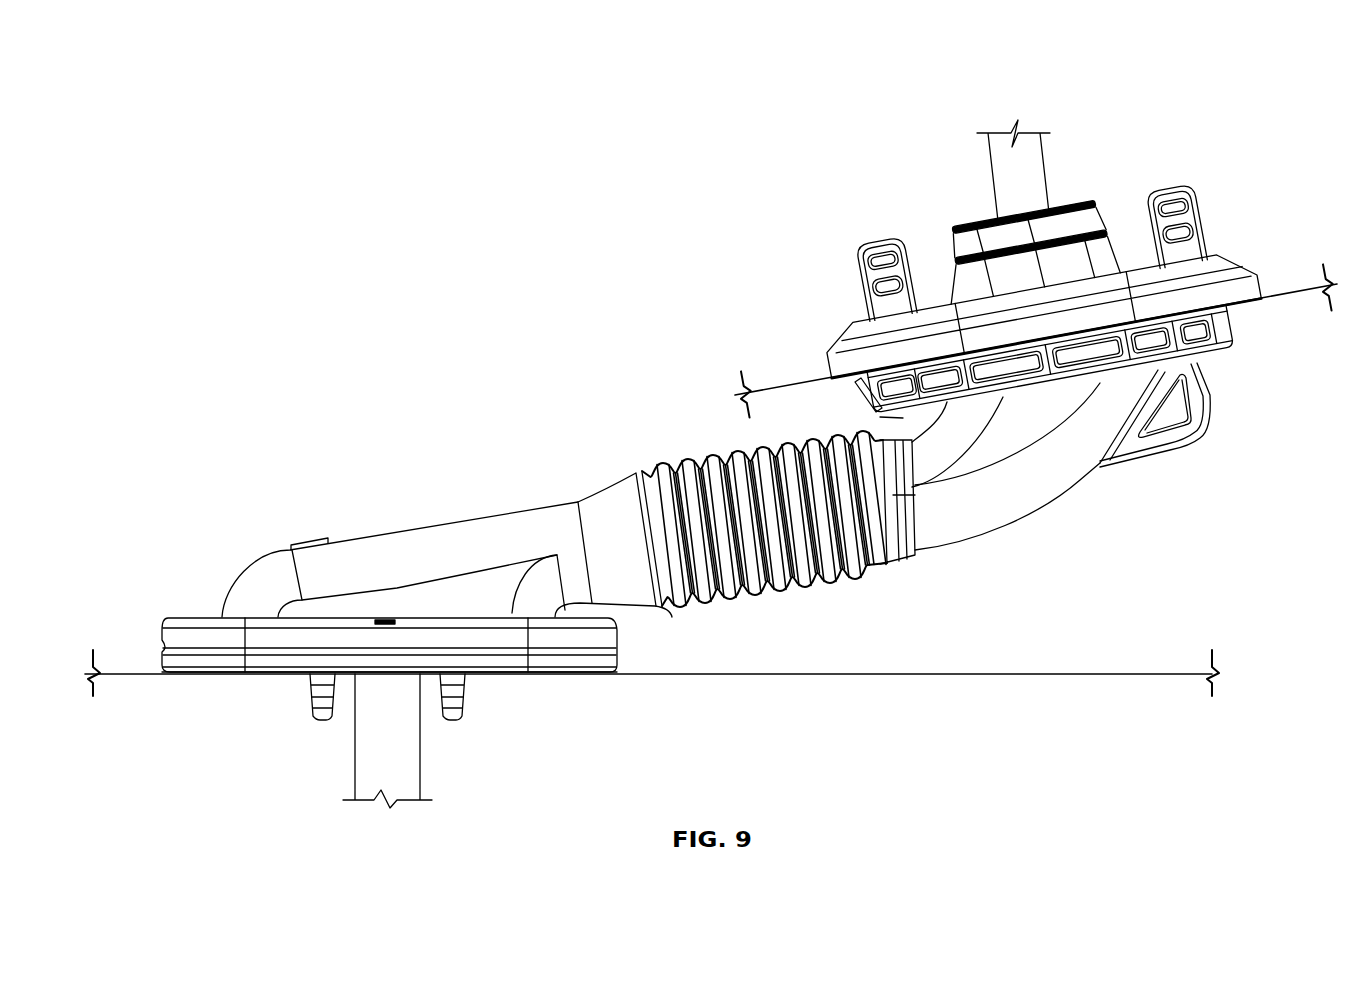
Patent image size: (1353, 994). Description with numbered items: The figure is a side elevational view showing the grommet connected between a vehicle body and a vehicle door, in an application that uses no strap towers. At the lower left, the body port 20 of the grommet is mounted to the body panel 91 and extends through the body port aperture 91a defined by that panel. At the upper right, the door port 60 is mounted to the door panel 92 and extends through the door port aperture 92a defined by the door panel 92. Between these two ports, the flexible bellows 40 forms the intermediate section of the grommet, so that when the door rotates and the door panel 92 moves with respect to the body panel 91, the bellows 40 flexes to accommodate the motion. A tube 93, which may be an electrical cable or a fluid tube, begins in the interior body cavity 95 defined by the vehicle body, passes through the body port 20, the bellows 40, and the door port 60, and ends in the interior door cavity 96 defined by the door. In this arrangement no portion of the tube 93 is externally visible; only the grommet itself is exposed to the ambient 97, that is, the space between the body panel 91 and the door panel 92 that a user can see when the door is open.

The body port 20 is at (172, 608).
The flexible bellows 40 is at (820, 582).
The door port 60 is at (808, 348).
The body panel 91 is at (1118, 673).
The body port aperture 91a is at (203, 687).
The door panel 92 is at (1298, 287).
The door port aperture 92a is at (848, 398).
The tube 93 is at (355, 762).
The interior body cavity 95 is at (940, 754).
The interior door cavity 96 is at (1196, 98).
The ambient 97 is at (1084, 573).